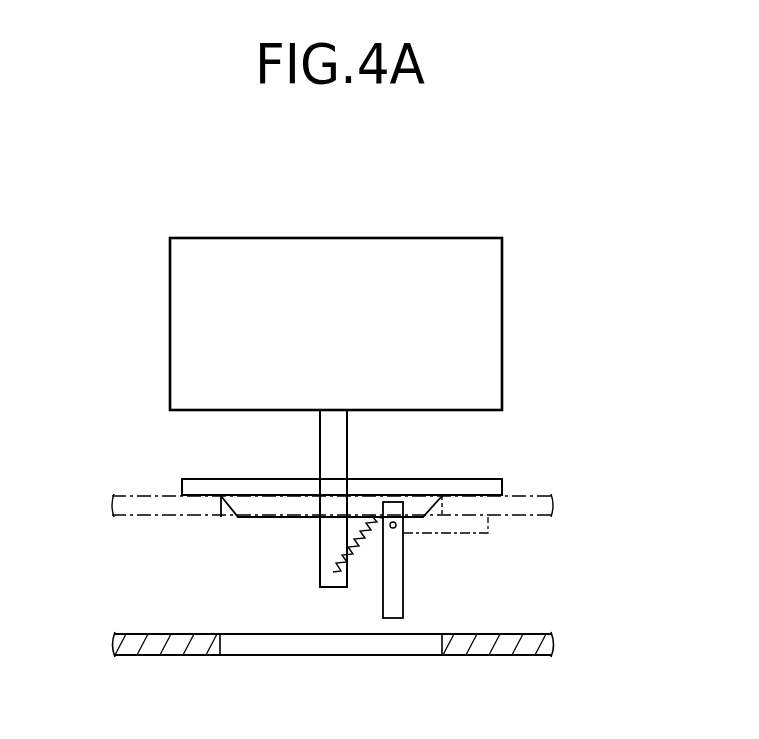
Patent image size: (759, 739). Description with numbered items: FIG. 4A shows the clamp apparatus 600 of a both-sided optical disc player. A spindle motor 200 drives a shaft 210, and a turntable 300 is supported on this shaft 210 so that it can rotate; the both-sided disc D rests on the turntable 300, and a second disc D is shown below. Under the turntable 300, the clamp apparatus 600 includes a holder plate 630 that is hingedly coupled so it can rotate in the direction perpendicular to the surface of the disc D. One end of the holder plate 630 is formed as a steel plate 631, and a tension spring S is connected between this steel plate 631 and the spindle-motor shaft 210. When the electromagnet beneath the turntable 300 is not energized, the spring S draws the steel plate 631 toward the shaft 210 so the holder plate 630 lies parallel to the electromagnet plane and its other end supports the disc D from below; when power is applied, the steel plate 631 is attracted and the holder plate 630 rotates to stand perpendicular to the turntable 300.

The spindle motor 200 is at (498, 343).
The shaft 210 is at (342, 453).
The turntable 300 is at (185, 463).
The clamp apparatus 600 is at (258, 534).
The holder plate 630 is at (397, 607).
The steel plate 631 is at (397, 505).
The tension spring S is at (360, 547).
The both-sided disc D is at (522, 515).